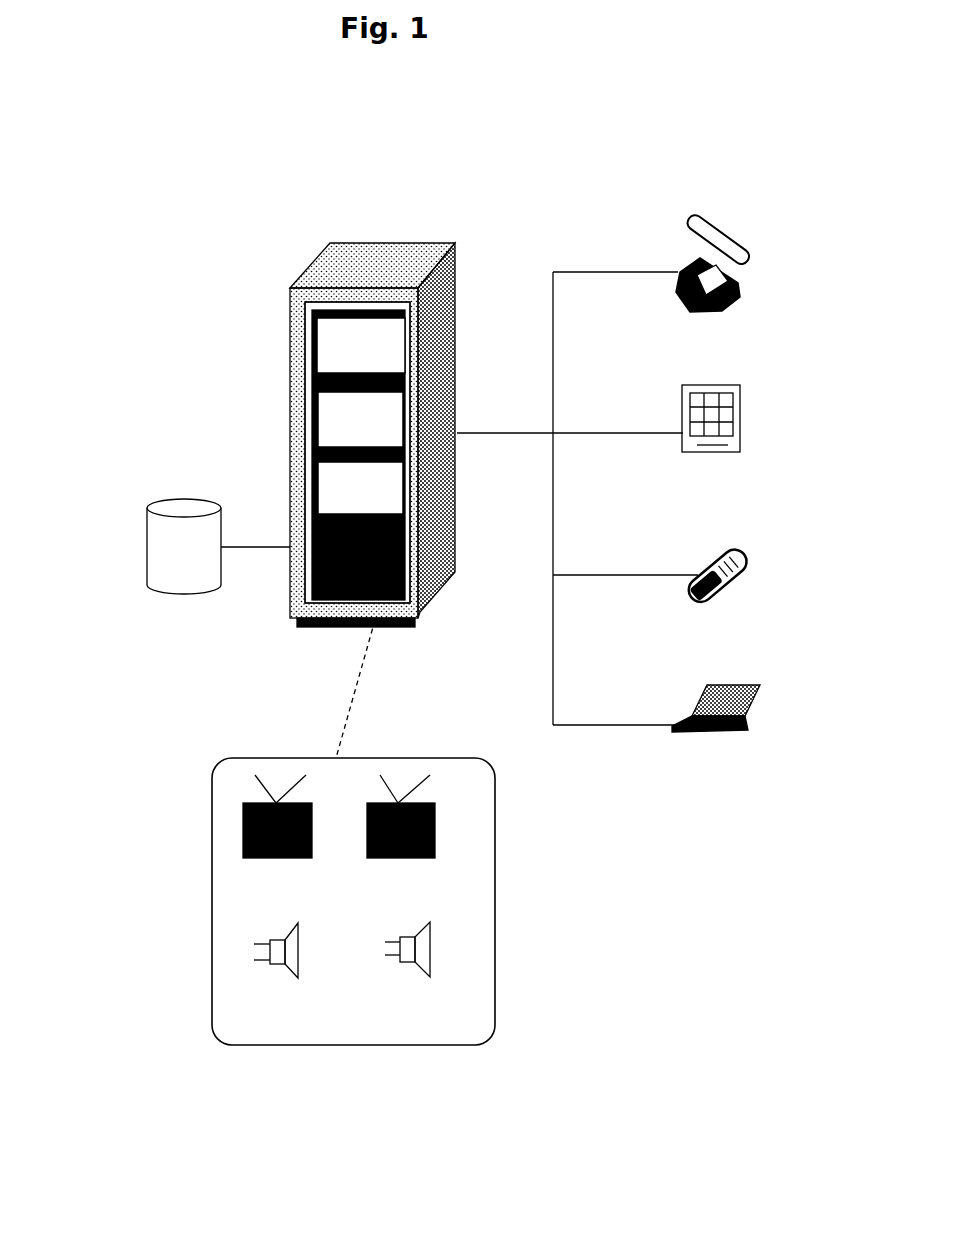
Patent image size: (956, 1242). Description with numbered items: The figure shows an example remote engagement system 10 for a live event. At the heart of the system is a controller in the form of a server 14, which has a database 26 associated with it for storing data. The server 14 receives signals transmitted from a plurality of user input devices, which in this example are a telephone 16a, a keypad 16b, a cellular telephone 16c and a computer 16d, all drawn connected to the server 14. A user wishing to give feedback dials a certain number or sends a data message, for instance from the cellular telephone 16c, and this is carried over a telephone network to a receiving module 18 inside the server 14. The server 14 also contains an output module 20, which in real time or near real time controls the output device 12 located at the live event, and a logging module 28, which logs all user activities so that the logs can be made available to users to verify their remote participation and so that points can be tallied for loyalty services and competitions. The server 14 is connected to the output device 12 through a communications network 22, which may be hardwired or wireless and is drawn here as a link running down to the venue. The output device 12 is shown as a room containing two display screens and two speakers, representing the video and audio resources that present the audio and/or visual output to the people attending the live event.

The remote engagement system 10 is at (82, 253).
The output device 12 is at (212, 903).
The server 14 is at (383, 243).
The telephone 16a is at (715, 250).
The keypad 16b is at (722, 388).
The cellular telephone 16c is at (745, 562).
The computer 16d is at (735, 688).
The receiving module 18 is at (317, 341).
The output module 20 is at (318, 410).
The communications network 22 is at (389, 689).
The database 26 is at (147, 548).
The logging module 28 is at (318, 476).